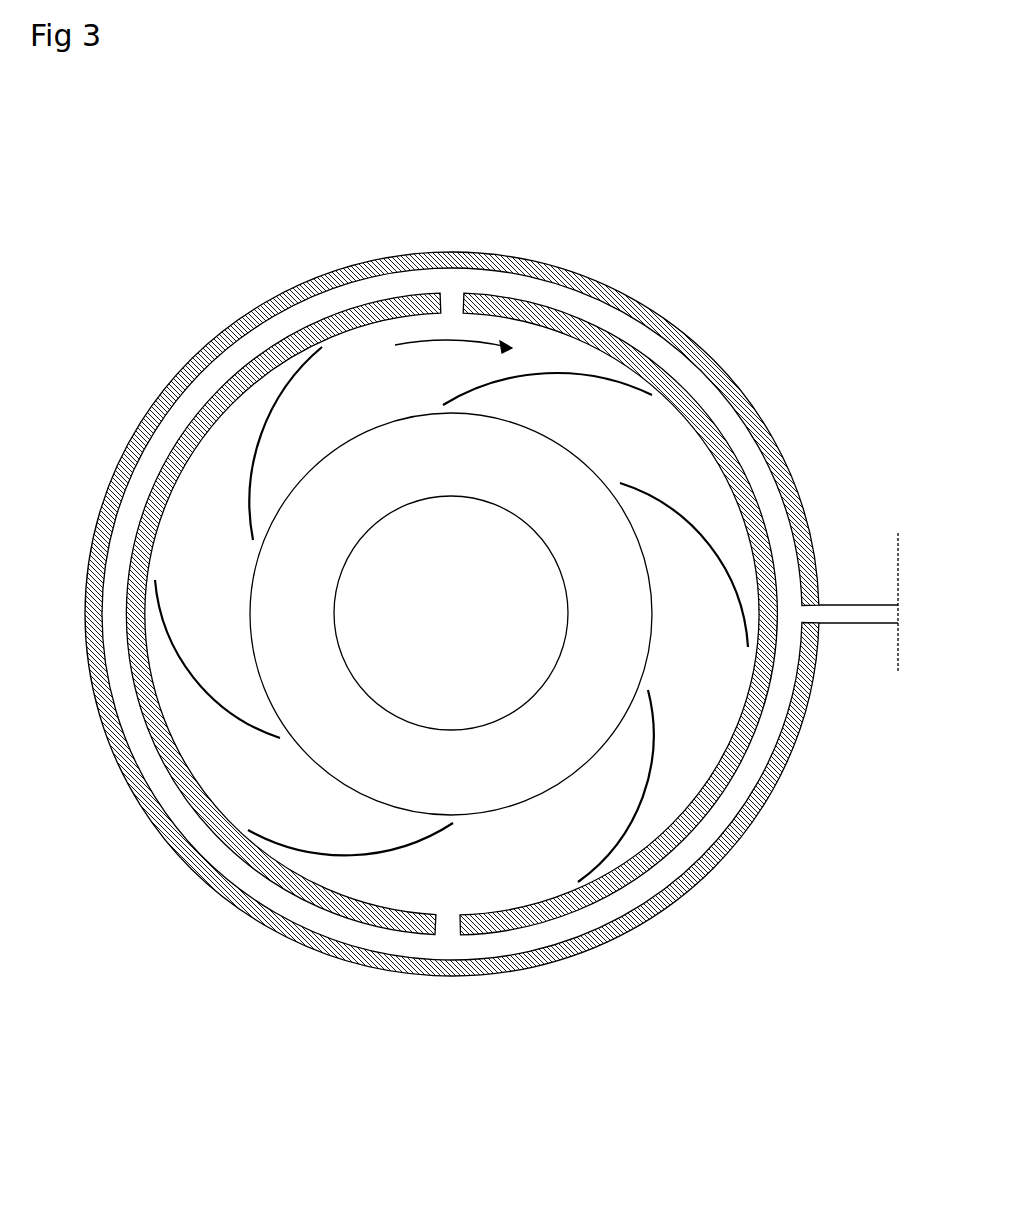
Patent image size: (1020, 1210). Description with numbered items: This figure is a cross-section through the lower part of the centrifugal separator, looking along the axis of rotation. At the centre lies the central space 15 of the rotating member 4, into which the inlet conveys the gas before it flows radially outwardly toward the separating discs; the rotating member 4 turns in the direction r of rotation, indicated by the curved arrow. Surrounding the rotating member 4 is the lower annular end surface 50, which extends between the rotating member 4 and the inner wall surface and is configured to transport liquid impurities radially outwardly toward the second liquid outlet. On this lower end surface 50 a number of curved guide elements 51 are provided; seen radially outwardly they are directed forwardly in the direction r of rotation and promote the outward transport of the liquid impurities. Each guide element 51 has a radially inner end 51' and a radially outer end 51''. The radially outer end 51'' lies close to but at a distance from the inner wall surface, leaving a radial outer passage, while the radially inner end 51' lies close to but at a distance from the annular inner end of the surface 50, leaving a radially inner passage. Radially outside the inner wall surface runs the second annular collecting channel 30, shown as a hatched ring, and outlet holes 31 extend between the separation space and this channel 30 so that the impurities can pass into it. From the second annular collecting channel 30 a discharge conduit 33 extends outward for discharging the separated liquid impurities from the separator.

The rotating member 4 is at (252, 573).
The central space 15 is at (473, 623).
The second annular collecting channel 30 is at (345, 297).
The outlet hole 31 is at (455, 300).
The discharge conduit 33 is at (850, 606).
The lower annular end surface 50 is at (449, 613).
The guide element 51 is at (449, 613).
The radially inner end 51' is at (729, 859).
The radially outer end 51'' is at (616, 859).
The direction of rotation r is at (440, 335).